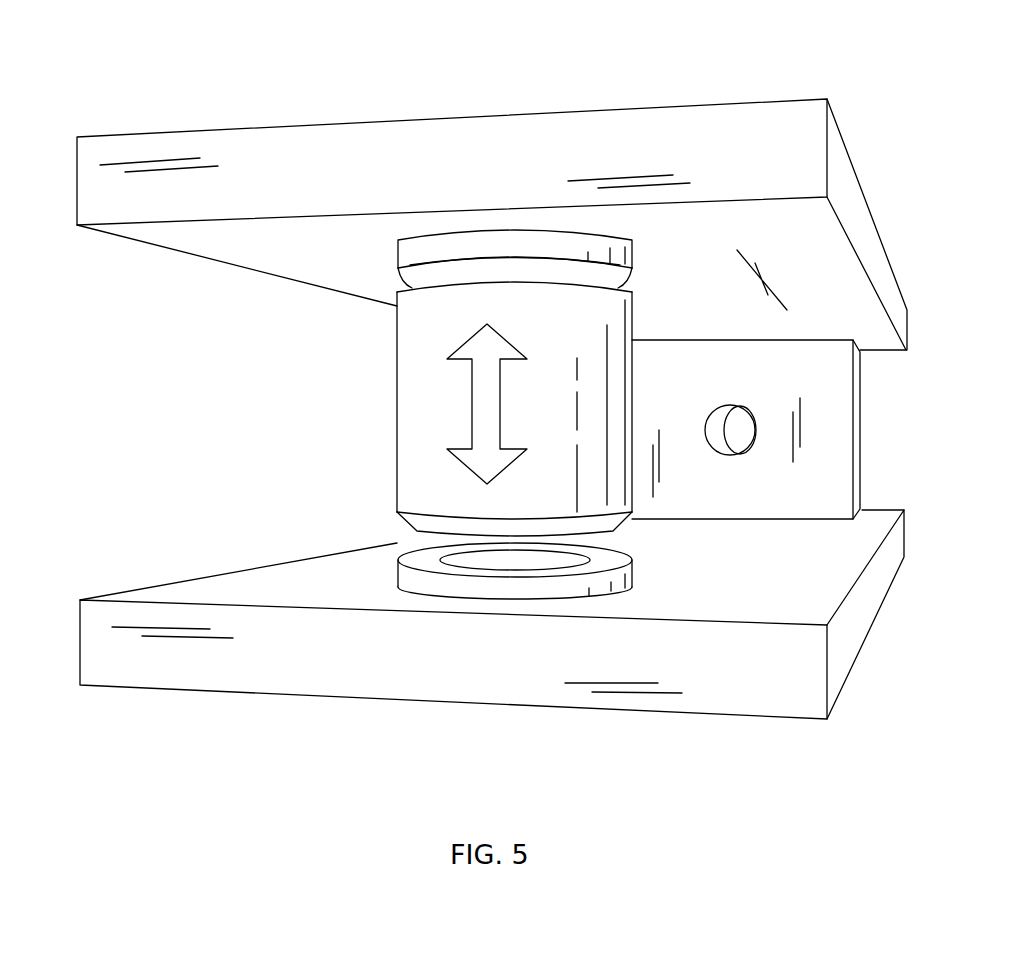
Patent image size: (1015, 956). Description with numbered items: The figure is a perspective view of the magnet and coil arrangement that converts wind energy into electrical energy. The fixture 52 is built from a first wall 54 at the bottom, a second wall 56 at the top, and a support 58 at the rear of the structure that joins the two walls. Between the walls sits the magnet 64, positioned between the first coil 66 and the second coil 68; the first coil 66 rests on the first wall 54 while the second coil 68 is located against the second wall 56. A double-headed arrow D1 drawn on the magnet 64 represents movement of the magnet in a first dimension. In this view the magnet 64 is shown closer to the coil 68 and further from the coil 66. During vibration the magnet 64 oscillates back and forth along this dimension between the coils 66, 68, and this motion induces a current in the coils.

The fixture 52 is at (895, 96).
The first wall 54 is at (760, 692).
The second wall 56 is at (717, 121).
The support 58 is at (856, 443).
The magnet 64 is at (397, 435).
The first coil 66 is at (443, 580).
The second coil 68 is at (466, 250).
The double-headed arrow D1 is at (472, 419).